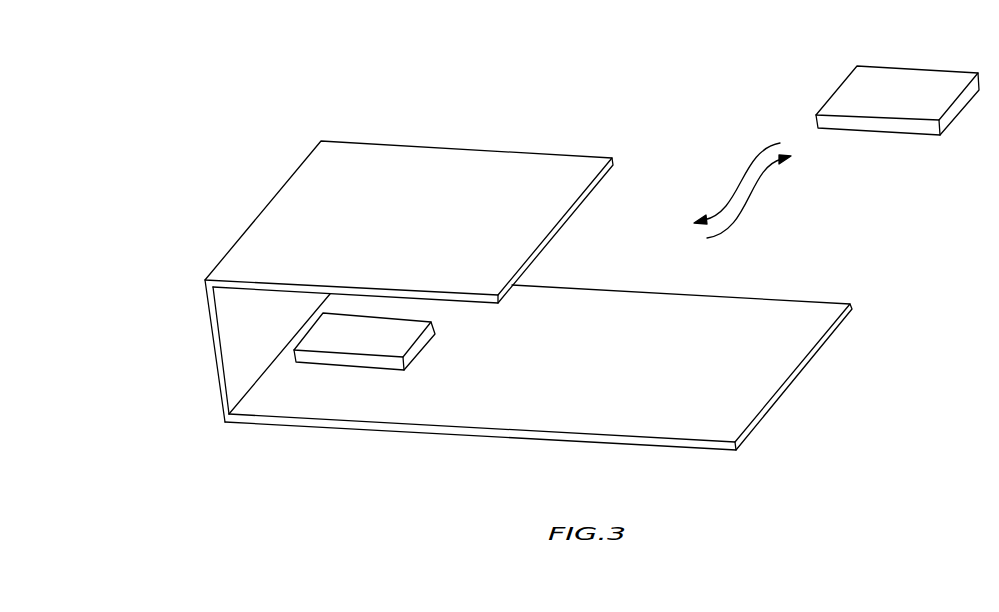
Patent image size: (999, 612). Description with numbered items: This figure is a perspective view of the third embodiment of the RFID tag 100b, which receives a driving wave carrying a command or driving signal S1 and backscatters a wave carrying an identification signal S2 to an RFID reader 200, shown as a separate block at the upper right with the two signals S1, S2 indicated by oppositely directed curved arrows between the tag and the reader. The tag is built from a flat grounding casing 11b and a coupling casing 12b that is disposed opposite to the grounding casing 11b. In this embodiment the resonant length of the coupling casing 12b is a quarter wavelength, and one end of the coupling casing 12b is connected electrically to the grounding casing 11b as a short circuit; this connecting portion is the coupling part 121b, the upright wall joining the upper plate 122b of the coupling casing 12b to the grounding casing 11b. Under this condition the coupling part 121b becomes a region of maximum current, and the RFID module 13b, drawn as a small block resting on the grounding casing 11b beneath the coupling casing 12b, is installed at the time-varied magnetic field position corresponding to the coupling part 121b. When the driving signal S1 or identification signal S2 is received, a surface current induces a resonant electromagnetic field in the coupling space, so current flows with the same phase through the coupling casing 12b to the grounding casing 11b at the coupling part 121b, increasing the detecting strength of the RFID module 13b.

The RFID tag 100b is at (268, 138).
The coupling casing 12b is at (242, 219).
The top plate of bracket 122b is at (449, 173).
The coupling part 121b is at (215, 342).
The grounding casing 11b is at (567, 442).
The RFID module 13b is at (347, 357).
The RFID reader 200 is at (915, 82).
The driving signal S1 is at (737, 183).
The identification signal S2 is at (749, 196).